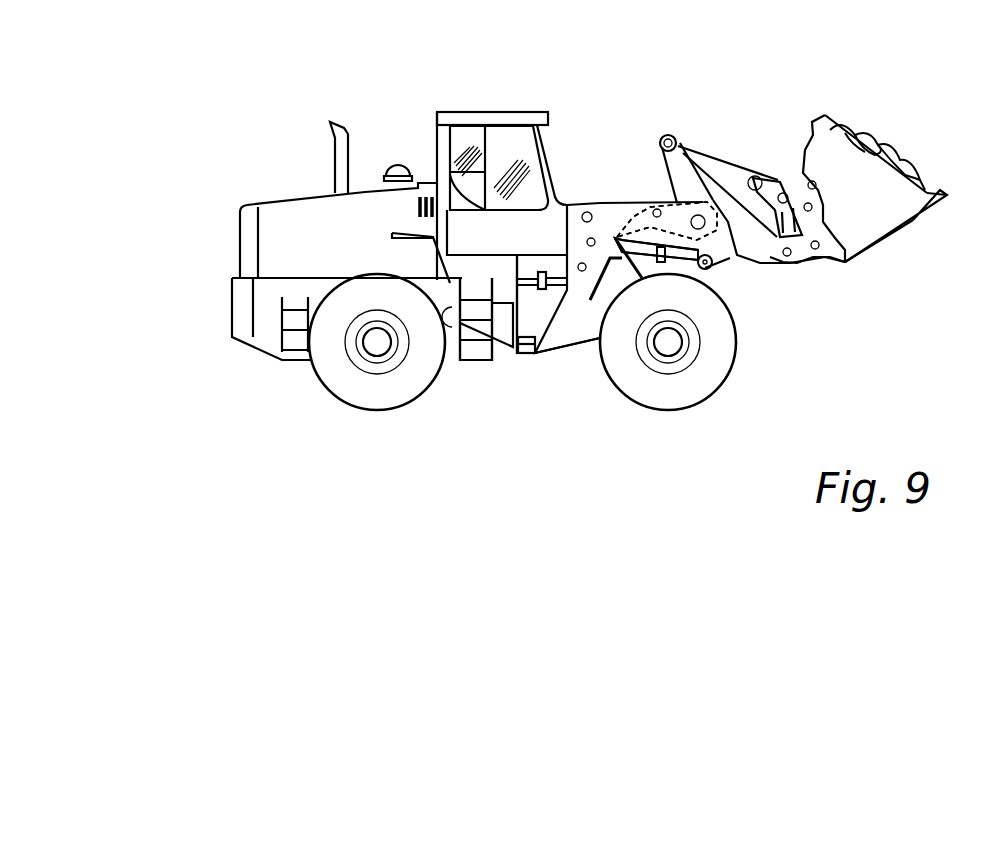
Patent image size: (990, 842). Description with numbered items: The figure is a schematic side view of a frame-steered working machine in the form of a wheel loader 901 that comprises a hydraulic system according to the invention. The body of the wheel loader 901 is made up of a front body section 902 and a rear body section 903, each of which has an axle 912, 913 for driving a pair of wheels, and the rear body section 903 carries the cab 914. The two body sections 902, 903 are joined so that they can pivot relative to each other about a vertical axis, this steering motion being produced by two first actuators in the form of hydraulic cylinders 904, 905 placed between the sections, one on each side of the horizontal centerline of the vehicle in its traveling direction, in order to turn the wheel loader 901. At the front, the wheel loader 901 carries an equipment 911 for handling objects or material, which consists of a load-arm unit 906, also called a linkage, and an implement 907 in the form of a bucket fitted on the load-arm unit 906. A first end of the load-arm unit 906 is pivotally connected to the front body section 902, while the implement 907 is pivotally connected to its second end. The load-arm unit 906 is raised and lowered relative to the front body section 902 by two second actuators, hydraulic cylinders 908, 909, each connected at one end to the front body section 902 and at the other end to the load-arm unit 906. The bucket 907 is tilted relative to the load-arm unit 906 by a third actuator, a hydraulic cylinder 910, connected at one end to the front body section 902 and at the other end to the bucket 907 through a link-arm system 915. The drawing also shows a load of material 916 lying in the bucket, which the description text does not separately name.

The wheel loader 901 is at (408, 94).
The front body section 902 is at (580, 338).
The rear body section 903 is at (265, 333).
The hydraulic cylinder 904 is at (565, 290).
The hydraulic cylinder 905 is at (498, 307).
The load-arm unit 906 is at (660, 200).
The implement 907 is at (877, 243).
The hydraulic cylinder 908 is at (693, 267).
The hydraulic cylinder 909 is at (666, 231).
The hydraulic cylinder 910 is at (603, 203).
The equipment 911 is at (755, 101).
The axle 912 is at (378, 350).
The axle 913 is at (668, 345).
The cab 914 is at (492, 111).
The link-arm system 915 is at (787, 183).
The material load 916 is at (897, 153).